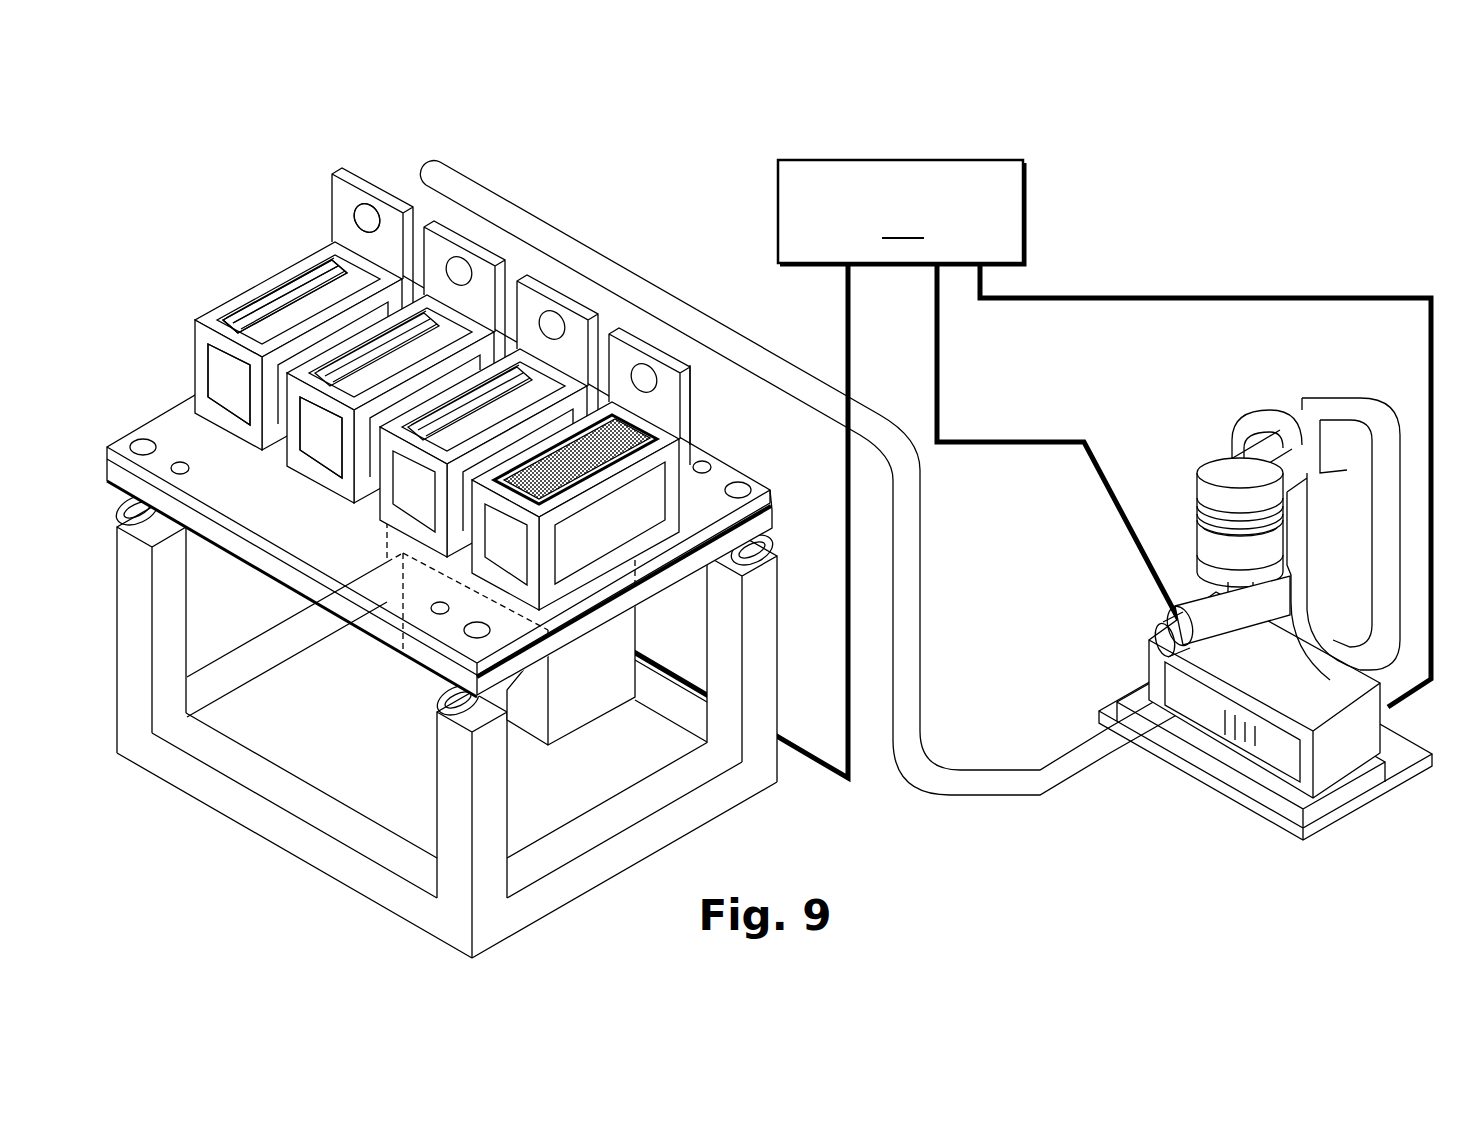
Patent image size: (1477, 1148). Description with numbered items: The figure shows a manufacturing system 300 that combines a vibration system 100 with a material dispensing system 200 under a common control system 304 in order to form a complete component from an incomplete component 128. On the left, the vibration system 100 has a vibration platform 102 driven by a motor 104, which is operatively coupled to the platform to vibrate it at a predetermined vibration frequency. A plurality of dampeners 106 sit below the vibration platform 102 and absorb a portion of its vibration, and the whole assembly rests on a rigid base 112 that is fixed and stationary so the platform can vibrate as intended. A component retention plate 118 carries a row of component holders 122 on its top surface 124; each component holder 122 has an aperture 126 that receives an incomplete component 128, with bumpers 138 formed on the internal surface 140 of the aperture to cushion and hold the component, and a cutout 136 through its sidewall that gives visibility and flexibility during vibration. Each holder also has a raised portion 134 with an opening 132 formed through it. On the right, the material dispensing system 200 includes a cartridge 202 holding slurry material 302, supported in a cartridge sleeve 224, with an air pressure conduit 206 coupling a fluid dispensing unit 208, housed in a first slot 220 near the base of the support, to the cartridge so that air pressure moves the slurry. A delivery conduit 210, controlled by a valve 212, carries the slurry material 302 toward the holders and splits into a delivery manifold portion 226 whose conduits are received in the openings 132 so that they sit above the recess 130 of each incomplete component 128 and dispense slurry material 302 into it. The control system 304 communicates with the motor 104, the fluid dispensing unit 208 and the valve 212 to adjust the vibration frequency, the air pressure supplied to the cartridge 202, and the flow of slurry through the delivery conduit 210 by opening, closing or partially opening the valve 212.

The vibration system 100 is at (230, 163).
The vibration platform 102 is at (780, 516).
The motor 104 is at (577, 678).
The dampeners 106 is at (155, 515).
The rigid base 112 is at (485, 782).
The component retention plate 118 is at (773, 497).
The component holder 122 is at (192, 332).
The top surface 124 is at (316, 544).
The aperture 126 is at (267, 288).
The incomplete component 128 is at (592, 413).
The recess 130 is at (555, 454).
The opening 132 is at (362, 205).
The raised portion 134 is at (318, 186).
The cutout 136 is at (215, 370).
The bumpers 138 is at (298, 282).
The internal surface 140 is at (231, 318).
The material dispensing system 200 is at (1208, 390).
The cartridge 202 is at (1217, 540).
The air pressure conduit 206 is at (1397, 408).
The fluid dispensing unit 208 is at (1388, 712).
The delivery conduit 210 is at (1170, 612).
The valve 212 is at (1180, 618).
The first slot 220 is at (1160, 680).
The cartridge sleeve 224 is at (1203, 510).
The delivery manifold portion 226 is at (664, 290).
The manufacturing system 300 is at (680, 135).
The slurry material 302 is at (640, 420).
The control system 304 is at (901, 212).